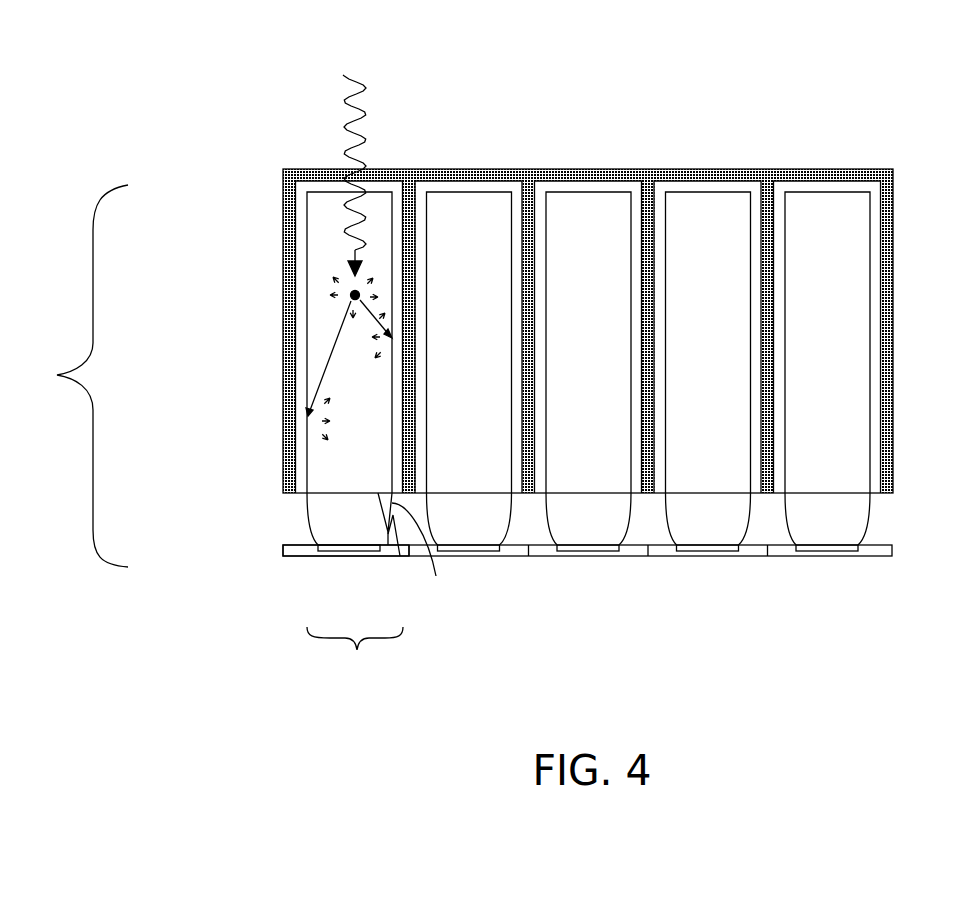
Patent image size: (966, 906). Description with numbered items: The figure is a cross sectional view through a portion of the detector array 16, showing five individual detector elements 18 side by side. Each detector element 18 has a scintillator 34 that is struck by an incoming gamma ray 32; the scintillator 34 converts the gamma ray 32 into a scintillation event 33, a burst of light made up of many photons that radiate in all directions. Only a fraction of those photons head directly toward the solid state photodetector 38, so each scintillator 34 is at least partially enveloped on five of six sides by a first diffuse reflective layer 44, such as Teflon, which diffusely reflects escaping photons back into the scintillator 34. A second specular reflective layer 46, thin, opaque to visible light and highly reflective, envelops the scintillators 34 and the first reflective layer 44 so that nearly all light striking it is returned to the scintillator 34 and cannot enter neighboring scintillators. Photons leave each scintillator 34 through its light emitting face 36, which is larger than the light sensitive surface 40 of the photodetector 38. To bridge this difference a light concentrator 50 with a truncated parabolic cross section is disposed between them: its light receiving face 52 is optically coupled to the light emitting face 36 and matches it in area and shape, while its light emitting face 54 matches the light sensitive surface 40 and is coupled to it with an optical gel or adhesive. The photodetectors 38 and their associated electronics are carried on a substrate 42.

The detector array 16 is at (76, 376).
The detector element 18 is at (355, 656).
The gamma ray 32 is at (345, 74).
The scintillation event 33 is at (363, 287).
The scintillator 34 is at (322, 340).
The light emitting face 36 is at (328, 493).
The solid state photodetector 38 is at (512, 552).
The light sensitive surface 40 is at (338, 556).
The substrate 42 is at (878, 557).
The first diffuse reflective layer 44 is at (303, 213).
The second specular reflective layer 46 is at (641, 169).
The light concentrator 50 is at (423, 551).
The light receiving face 52 is at (400, 556).
The light emitting face 54 is at (376, 545).